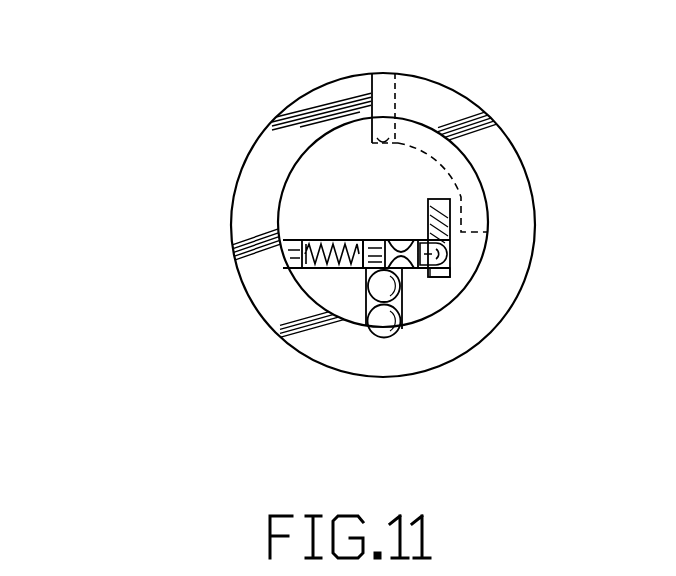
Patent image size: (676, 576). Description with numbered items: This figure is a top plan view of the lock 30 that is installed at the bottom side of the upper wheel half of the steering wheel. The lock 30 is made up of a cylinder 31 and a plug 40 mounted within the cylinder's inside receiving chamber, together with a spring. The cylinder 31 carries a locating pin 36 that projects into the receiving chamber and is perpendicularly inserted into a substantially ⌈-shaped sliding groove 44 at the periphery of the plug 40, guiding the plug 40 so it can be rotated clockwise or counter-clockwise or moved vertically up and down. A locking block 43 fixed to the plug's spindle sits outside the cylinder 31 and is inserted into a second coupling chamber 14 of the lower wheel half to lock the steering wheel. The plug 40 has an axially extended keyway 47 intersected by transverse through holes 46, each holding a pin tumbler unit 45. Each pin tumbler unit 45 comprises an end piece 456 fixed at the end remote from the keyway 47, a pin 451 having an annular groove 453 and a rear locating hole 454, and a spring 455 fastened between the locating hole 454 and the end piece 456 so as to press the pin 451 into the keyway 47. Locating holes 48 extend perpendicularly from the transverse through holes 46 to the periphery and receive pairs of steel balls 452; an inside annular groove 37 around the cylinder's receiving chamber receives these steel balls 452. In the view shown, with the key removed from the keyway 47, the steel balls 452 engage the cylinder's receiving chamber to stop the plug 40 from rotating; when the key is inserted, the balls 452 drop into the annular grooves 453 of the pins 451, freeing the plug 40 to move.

The lock 30 is at (532, 88).
The cylinder 31 is at (323, 87).
The second coupling chamber 14 is at (333, 173).
The plug 40 is at (292, 198).
The locating pin 36 is at (398, 90).
The sliding groove 44 is at (462, 186).
The locking block 43 is at (300, 246).
The transverse through hole 46 is at (302, 250).
The end piece 456 is at (297, 255).
The spring 455 is at (288, 265).
The locating hole 454 is at (358, 268).
The pin tumbler unit 45 is at (450, 243).
The locating hole 48 is at (402, 329).
The steel balls 452 is at (385, 322).
The inside annular groove 37 is at (392, 305).
The annular groove 453 is at (408, 266).
The pin 451 is at (438, 269).
The keyway 47 is at (445, 270).